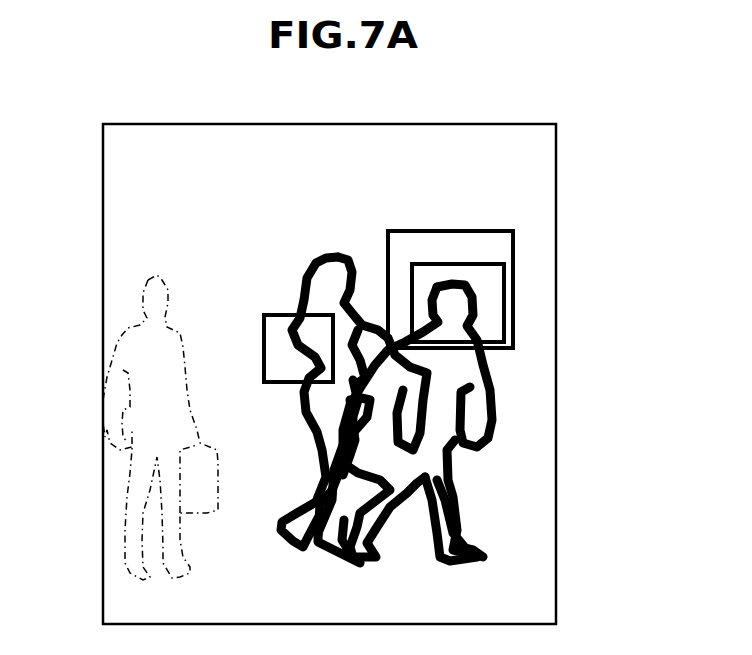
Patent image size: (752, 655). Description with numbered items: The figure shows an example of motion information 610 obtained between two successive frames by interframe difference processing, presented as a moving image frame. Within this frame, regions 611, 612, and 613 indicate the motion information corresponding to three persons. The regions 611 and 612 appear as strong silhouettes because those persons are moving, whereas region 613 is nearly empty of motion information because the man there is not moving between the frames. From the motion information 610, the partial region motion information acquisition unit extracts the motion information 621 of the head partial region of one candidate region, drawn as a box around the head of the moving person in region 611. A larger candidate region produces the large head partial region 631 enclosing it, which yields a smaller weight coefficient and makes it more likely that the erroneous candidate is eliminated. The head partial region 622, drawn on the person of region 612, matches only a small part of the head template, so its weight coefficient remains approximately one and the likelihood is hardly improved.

The motion information 610 is at (139, 124).
The region 611 is at (458, 491).
The region 612 is at (380, 207).
The region 613 is at (138, 322).
The motion information of the head partial region 621 is at (493, 264).
The head partial region 622 is at (277, 314).
The head partial region 631 is at (475, 231).